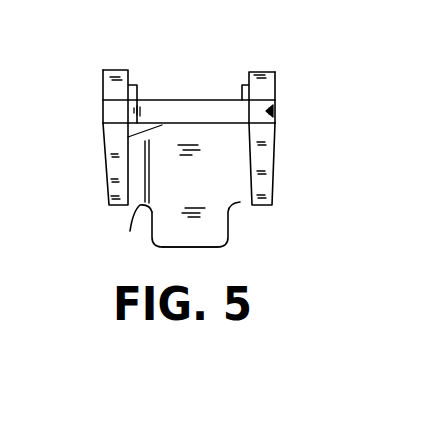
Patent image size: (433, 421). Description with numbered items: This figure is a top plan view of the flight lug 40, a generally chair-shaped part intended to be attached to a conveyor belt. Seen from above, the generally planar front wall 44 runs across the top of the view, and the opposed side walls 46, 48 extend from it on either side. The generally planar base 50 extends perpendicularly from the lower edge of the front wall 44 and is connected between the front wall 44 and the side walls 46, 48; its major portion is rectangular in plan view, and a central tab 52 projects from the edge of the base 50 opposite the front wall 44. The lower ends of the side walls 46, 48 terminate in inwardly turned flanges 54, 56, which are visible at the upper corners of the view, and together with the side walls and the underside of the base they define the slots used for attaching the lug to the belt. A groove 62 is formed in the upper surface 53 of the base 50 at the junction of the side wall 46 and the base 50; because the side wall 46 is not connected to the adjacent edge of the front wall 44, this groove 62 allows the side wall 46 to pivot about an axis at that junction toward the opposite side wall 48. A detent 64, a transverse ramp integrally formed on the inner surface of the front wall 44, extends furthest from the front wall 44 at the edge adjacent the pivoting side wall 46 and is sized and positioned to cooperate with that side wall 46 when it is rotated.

The flight lug 40 is at (293, 72).
The front wall 44 is at (214, 105).
The side wall 46 is at (105, 164).
The side wall 48 is at (277, 157).
The base 50 is at (233, 188).
The central tab 52 is at (152, 246).
The upper surface 53 is at (177, 136).
The flange 54 is at (138, 84).
The flange 56 is at (244, 84).
The groove 62 is at (137, 211).
The detent 64 is at (150, 142).